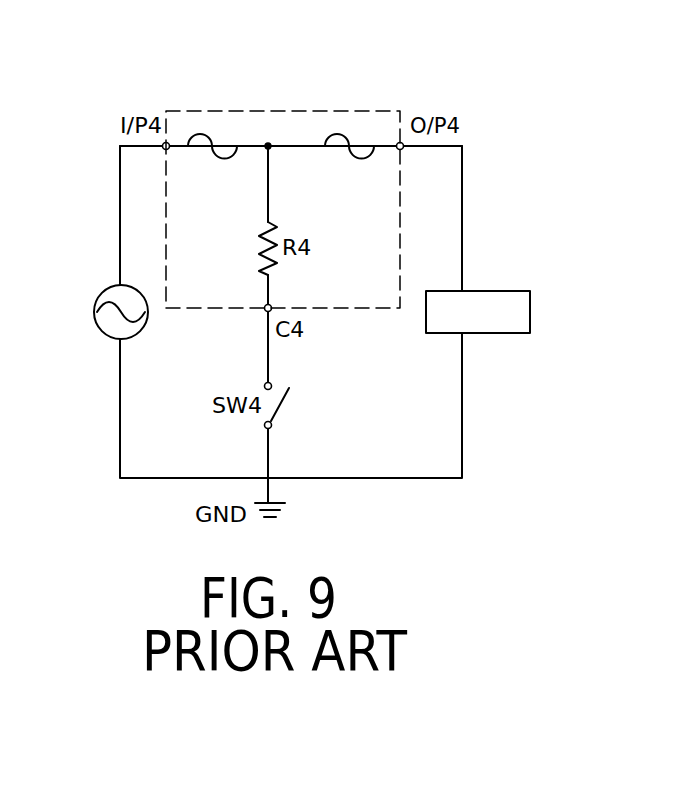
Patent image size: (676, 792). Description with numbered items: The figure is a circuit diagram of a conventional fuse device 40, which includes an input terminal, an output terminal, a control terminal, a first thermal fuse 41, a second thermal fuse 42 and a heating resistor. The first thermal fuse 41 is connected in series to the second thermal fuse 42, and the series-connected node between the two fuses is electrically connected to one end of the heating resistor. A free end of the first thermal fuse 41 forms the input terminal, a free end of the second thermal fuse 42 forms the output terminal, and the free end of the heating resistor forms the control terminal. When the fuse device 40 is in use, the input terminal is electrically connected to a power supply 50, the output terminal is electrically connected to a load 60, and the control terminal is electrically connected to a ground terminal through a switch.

The fuse device 40 is at (305, 110).
The first thermal fuse 41 is at (205, 136).
The second thermal fuse 42 is at (348, 137).
The power supply 50 is at (98, 292).
The load 60 is at (530, 298).